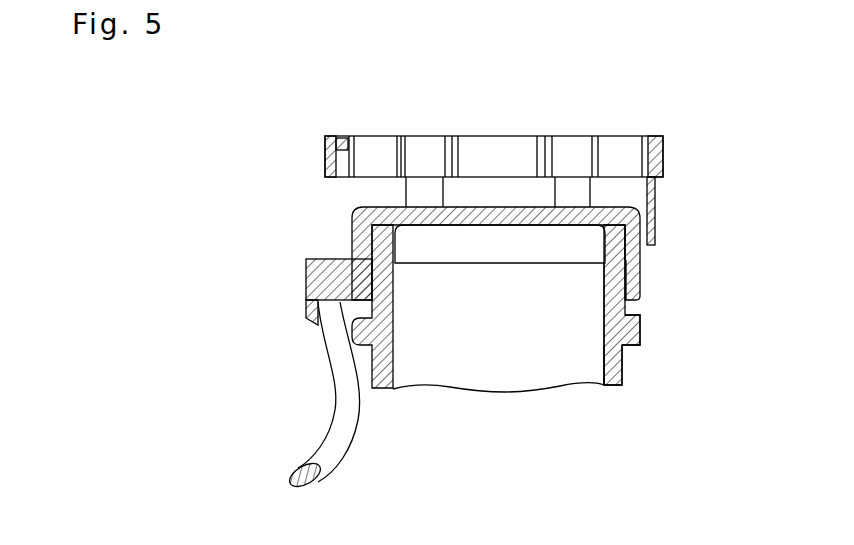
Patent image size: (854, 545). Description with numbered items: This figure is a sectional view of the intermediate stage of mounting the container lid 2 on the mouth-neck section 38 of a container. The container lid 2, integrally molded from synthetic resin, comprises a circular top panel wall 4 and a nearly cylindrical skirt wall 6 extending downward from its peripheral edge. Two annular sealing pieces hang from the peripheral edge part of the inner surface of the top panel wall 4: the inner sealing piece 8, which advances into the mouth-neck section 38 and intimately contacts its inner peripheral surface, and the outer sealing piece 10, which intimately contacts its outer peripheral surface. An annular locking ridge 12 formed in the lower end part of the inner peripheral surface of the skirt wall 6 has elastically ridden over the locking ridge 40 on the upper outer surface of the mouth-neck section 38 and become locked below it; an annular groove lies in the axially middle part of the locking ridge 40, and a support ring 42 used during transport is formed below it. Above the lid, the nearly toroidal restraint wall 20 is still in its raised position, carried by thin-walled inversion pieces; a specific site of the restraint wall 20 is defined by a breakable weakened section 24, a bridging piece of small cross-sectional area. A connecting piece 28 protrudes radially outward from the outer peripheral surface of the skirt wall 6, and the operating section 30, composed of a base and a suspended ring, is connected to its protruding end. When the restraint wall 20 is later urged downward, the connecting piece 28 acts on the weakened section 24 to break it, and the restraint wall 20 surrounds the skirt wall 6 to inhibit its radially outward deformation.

The container lid 2 is at (677, 122).
The top panel wall 4 is at (497, 205).
The skirt wall 6 is at (651, 279).
The inner sealing piece 8 is at (600, 244).
The outer sealing piece 10 is at (642, 243).
The locking ridge 12 is at (603, 292).
The restraint wall 20 is at (322, 158).
The weakened section 24 is at (339, 141).
The connecting piece 28 is at (328, 258).
The operating section 30 is at (311, 341).
The mouth-neck section 38 is at (628, 370).
The locking ridge 40 is at (647, 262).
The support ring 42 is at (641, 331).